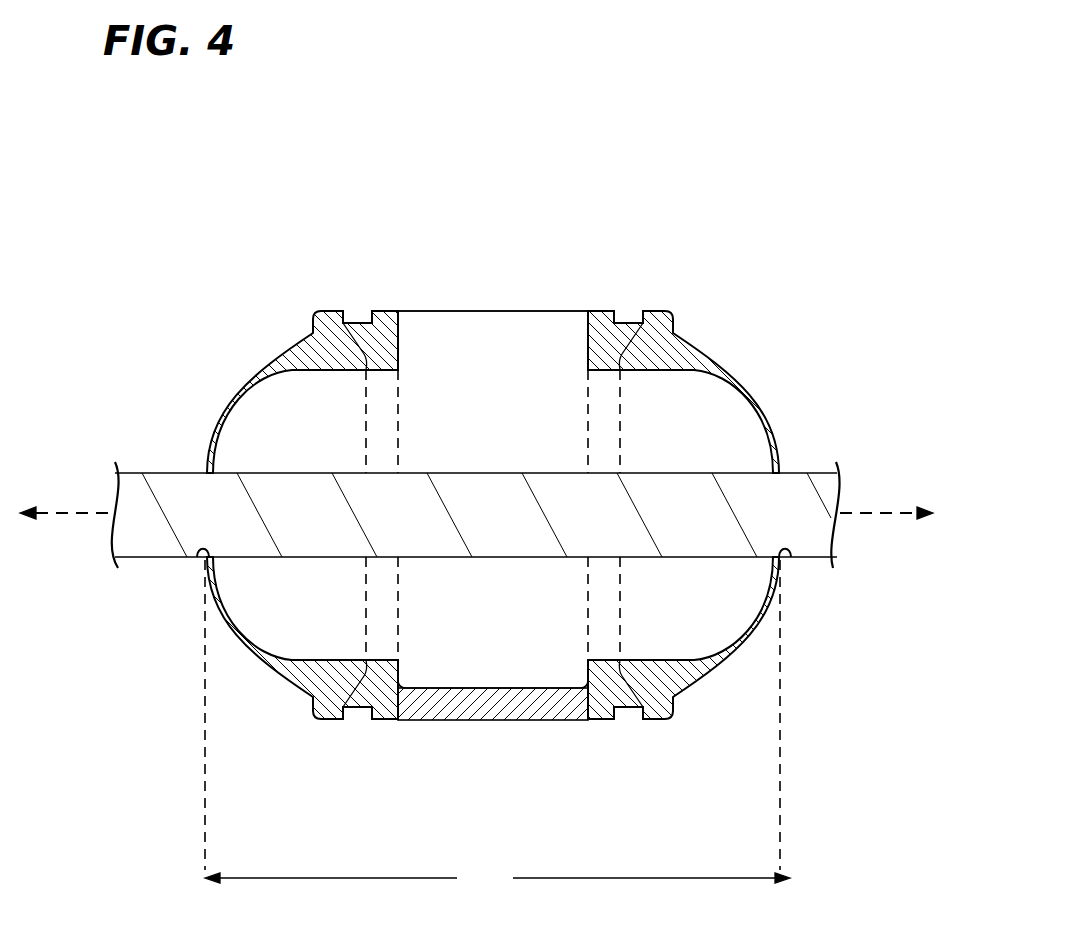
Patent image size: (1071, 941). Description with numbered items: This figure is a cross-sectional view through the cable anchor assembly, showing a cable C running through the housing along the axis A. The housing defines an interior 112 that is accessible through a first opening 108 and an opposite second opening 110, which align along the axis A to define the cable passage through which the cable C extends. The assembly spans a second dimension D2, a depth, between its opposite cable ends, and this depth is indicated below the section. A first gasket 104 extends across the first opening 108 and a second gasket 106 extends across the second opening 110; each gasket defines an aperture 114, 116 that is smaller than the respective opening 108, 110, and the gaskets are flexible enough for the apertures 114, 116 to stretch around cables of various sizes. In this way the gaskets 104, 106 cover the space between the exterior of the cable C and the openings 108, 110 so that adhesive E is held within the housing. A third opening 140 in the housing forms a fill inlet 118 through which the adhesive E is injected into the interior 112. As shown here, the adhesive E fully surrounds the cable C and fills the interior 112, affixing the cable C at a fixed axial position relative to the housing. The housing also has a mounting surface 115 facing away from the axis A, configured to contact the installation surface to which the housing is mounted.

The first gasket 104 is at (722, 363).
The second gasket 106 is at (238, 395).
The first opening 108 is at (607, 652).
The second opening 110 is at (386, 652).
The interior 112 is at (444, 625).
The aperture 114 is at (791, 553).
The mounting surface 115 is at (500, 721).
The aperture 116 is at (201, 552).
The fill inlet 118 is at (582, 325).
The third opening 140 is at (402, 332).
The axis A is at (52, 513).
The cable C is at (795, 473).
The adhesive E is at (483, 305).
The second dimension D2 is at (497, 726).